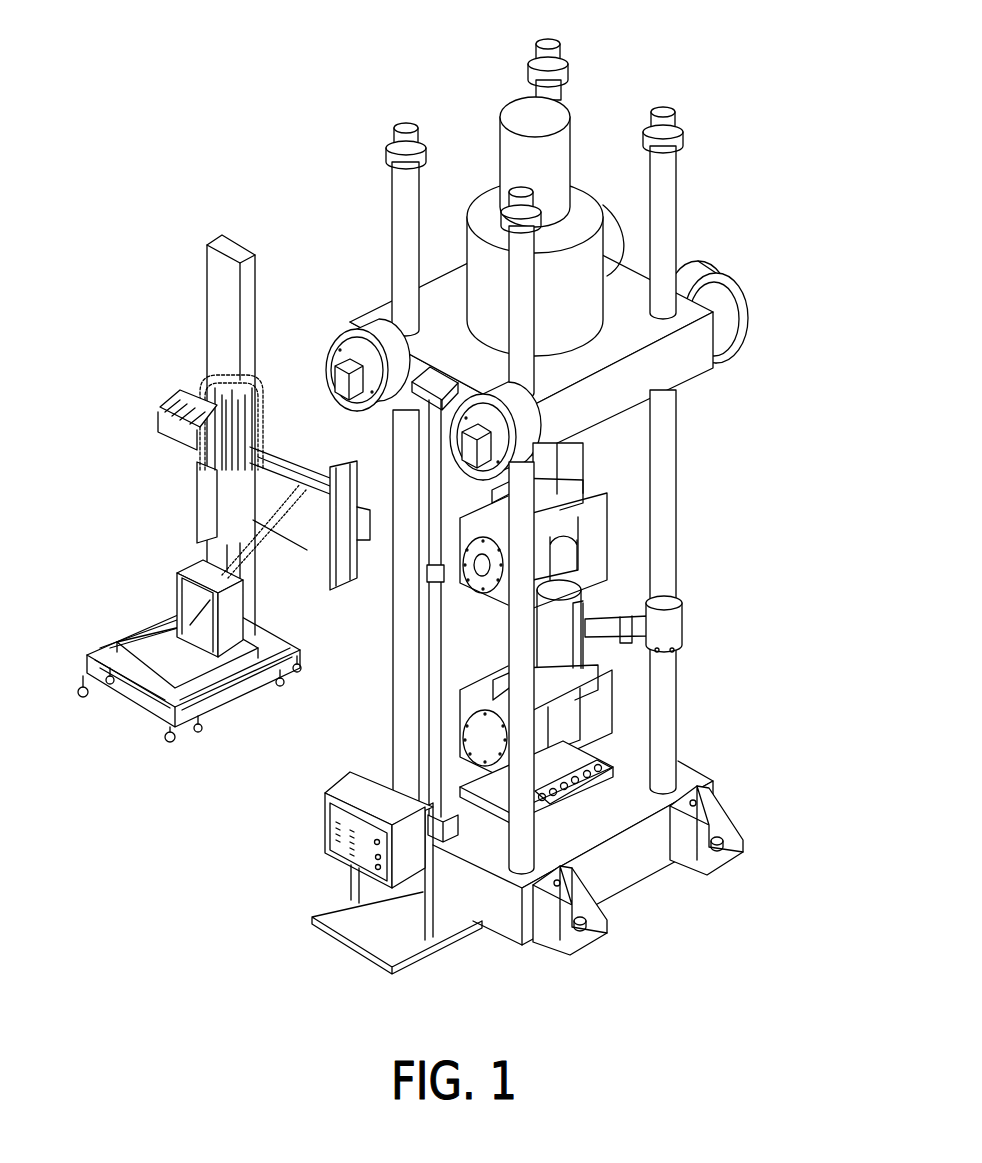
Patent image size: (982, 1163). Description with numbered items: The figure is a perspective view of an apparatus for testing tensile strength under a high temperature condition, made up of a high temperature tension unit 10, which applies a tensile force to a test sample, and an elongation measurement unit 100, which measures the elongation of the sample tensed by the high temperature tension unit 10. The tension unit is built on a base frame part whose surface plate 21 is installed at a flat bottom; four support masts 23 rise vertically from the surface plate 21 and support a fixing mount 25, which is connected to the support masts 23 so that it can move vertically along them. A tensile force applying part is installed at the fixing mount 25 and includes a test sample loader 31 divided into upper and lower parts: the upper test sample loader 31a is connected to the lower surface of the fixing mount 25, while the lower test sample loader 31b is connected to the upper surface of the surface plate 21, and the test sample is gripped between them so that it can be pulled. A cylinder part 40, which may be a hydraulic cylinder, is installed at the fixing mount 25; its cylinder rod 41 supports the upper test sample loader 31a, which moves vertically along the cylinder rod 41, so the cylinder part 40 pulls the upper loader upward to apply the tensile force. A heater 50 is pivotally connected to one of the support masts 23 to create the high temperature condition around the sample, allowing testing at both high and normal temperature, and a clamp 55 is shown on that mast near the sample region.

The high temperature tension unit 10 is at (579, 494).
The surface plate 21 is at (628, 858).
The support masts 23 is at (582, 410).
The fixing mount 25 is at (730, 295).
The test sample loader 31 is at (653, 650).
The upper test sample loader 31a is at (597, 537).
The lower test sample loader 31b is at (593, 727).
The cylinder part 40 is at (577, 273).
The cylinder rod 41 is at (547, 473).
The heater 50 is at (573, 657).
The extensometer clamp 55 is at (667, 623).
The elongation measurement unit 100 is at (172, 513).